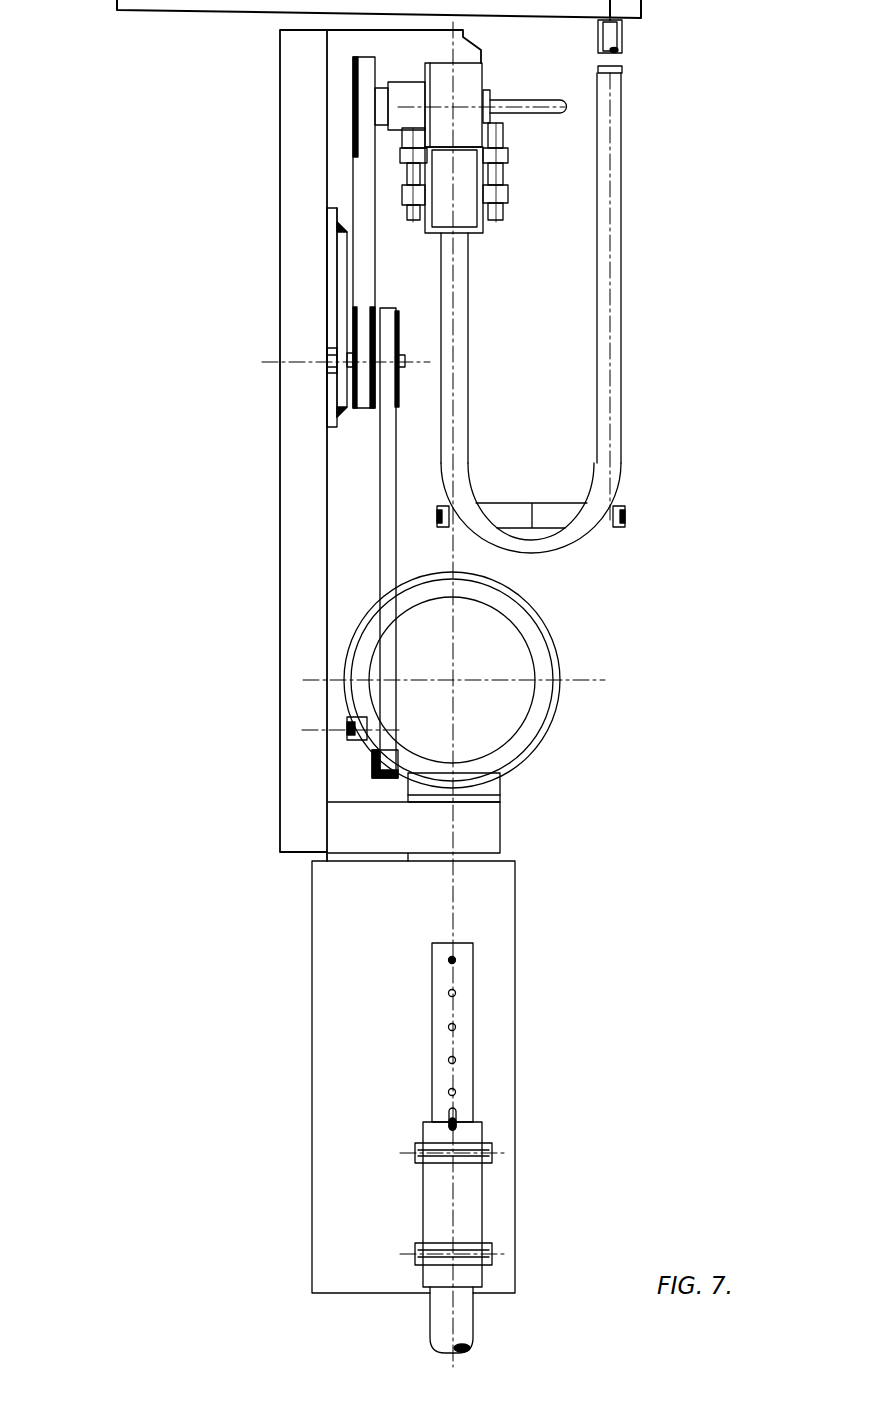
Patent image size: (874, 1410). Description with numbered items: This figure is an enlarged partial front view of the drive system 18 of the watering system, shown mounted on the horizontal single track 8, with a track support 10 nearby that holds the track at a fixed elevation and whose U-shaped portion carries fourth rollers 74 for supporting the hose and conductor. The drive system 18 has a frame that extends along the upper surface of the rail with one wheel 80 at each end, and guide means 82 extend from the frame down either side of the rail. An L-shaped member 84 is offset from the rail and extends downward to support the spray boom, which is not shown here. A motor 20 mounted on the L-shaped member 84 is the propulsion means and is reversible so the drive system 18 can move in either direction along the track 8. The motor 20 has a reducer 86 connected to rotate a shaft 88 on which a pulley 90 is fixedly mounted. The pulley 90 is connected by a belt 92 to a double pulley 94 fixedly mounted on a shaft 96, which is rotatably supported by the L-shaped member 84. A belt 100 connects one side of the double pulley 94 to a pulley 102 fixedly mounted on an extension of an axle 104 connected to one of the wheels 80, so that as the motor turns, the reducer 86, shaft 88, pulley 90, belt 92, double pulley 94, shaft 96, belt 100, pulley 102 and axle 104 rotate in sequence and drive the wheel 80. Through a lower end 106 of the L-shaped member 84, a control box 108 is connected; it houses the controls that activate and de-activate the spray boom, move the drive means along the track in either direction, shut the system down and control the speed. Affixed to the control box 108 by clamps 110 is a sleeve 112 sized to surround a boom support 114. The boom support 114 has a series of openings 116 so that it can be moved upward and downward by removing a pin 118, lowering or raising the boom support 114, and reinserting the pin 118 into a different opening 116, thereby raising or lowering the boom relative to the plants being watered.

The track 8 is at (483, 230).
The track support 10 is at (600, 282).
The drive system 18 is at (281, 285).
The motor 20 is at (492, 732).
The fourth rollers 74 is at (520, 520).
The wheel 80 is at (464, 88).
The guide means 82 is at (410, 181).
The L-shaped member 84 is at (298, 570).
The reducer 86 is at (350, 647).
The shaft 88 is at (347, 722).
The pulley 90 is at (372, 772).
The belt 92 is at (382, 513).
The double pulley 94 is at (347, 394).
The shaft 96 is at (345, 352).
The belt 100 is at (363, 170).
The pulley 102 is at (357, 107).
The axle 104 is at (408, 93).
The lower end 106 is at (348, 840).
The control box 108 is at (513, 882).
The clamps 110 is at (493, 1145).
The sleeve 112 is at (468, 1208).
The boom support 114 is at (467, 1043).
The openings 116 is at (455, 993).
The pin 118 is at (457, 1112).